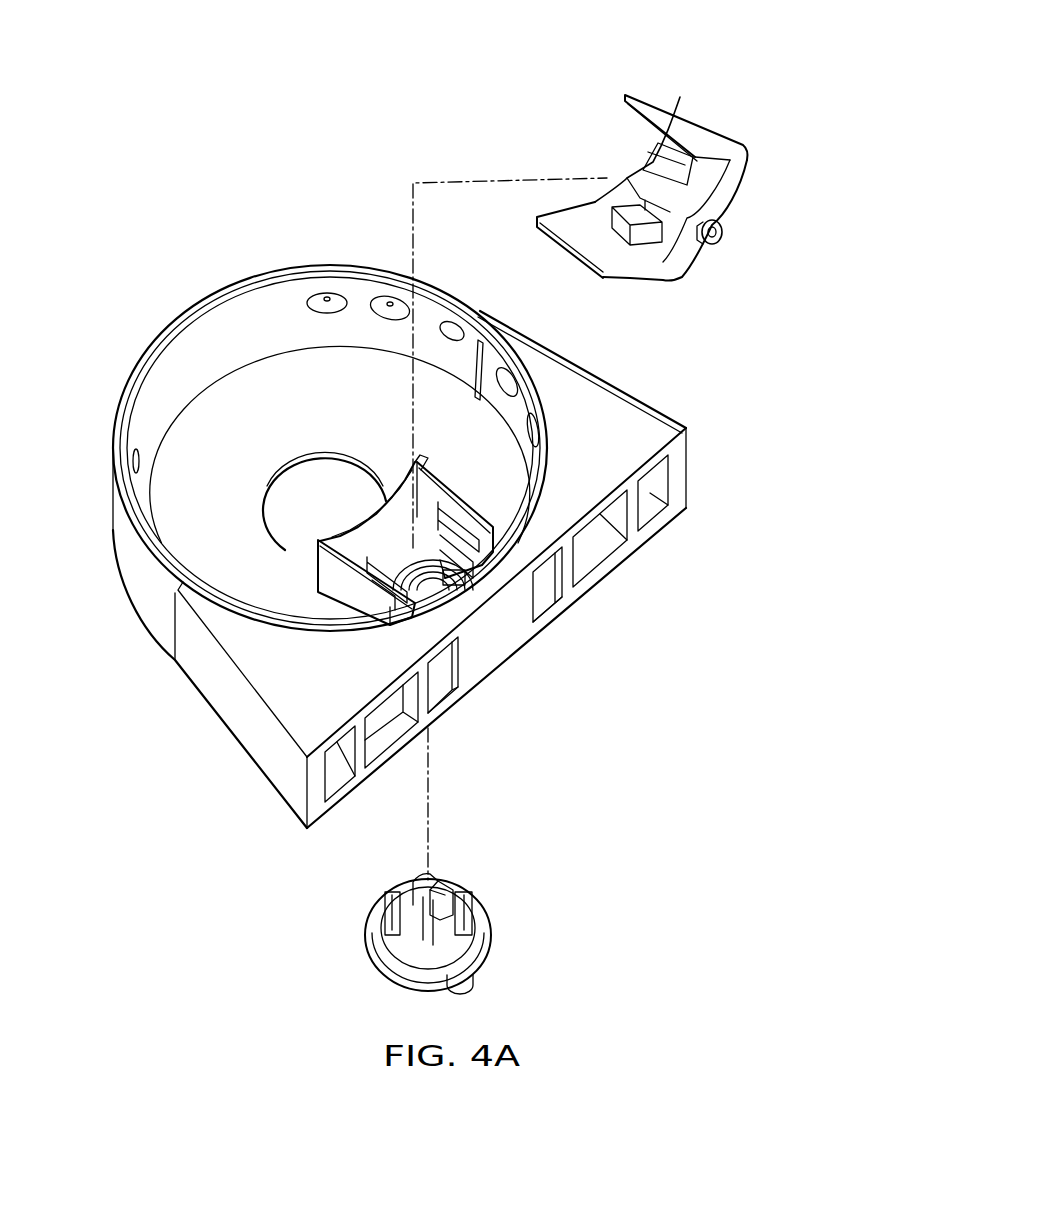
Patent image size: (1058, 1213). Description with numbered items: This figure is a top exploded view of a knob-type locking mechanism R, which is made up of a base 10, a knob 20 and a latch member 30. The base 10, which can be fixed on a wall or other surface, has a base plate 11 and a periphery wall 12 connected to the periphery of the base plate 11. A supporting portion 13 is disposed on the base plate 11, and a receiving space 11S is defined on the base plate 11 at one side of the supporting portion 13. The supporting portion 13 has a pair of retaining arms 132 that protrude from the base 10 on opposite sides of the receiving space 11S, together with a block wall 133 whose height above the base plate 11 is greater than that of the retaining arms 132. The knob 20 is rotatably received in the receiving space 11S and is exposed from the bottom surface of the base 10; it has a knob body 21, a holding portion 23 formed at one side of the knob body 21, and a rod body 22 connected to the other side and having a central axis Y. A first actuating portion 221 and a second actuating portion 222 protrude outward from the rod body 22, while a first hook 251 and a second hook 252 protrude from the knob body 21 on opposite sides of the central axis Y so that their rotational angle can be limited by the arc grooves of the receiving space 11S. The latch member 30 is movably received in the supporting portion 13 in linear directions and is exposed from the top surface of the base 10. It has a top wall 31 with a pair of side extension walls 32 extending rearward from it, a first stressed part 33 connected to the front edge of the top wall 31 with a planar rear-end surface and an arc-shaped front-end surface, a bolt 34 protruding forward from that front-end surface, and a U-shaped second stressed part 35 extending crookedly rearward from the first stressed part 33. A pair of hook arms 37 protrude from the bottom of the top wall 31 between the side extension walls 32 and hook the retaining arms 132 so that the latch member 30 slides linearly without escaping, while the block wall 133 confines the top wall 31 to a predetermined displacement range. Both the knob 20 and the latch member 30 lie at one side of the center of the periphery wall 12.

The base 10 is at (667, 407).
The base plate 11 is at (203, 423).
The receiving space 11S is at (450, 603).
The periphery wall 12 is at (215, 298).
The supporting portion 13 is at (330, 597).
The retaining arms 132 is at (487, 543).
The block wall 133 is at (467, 515).
The knob 20 is at (445, 902).
The knob body 21 is at (370, 944).
The rod body 22 is at (427, 930).
The holding portion 23 is at (468, 987).
The first actuating portion 221 is at (450, 897).
The second actuating portion 222 is at (433, 878).
The first hook 251 is at (470, 903).
The second hook 252 is at (390, 900).
The latch member 30 is at (638, 151).
The top wall 31 is at (645, 165).
The side extension walls 32 is at (677, 110).
The first stressed part 33 is at (724, 208).
The bolt 34 is at (717, 240).
The second stressed part 35 is at (648, 158).
The hook arms 37 is at (648, 152).
The knob-type locking mechanism R is at (280, 125).
The central axis Y is at (431, 782).